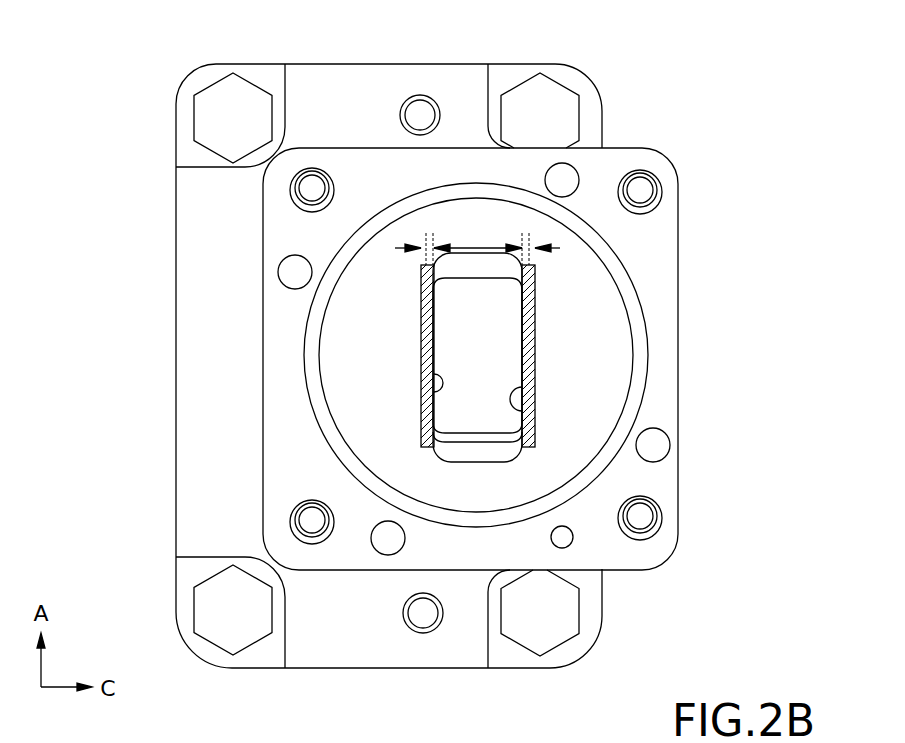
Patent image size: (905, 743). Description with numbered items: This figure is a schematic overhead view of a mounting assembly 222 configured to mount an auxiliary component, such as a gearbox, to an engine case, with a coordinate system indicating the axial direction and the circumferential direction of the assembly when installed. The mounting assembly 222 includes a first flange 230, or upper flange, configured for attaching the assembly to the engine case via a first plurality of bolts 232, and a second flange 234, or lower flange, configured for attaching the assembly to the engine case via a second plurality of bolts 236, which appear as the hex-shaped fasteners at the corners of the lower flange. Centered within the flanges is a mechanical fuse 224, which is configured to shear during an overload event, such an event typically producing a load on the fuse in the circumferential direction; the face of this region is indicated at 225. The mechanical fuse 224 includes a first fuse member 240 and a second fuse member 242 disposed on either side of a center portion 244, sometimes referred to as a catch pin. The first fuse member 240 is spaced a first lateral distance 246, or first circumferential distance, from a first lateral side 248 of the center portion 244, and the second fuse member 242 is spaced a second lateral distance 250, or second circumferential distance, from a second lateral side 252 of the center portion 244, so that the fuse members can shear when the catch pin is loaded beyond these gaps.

The mounting assembly 222 is at (110, 90).
The mechanical fuse 224 is at (564, 343).
The end face 225 is at (470, 497).
The first flange 230 is at (670, 410).
The first plurality of bolts 232 is at (640, 192).
The second flange 234 is at (195, 518).
The second plurality of bolts 236 is at (553, 108).
The first fuse member 240 is at (532, 377).
The second fuse member 242 is at (420, 350).
The center portion 244 is at (458, 327).
The first lateral distance 246 is at (556, 250).
The first lateral side 248 is at (527, 412).
The second lateral distance 250 is at (400, 250).
The second lateral side 252 is at (432, 390).